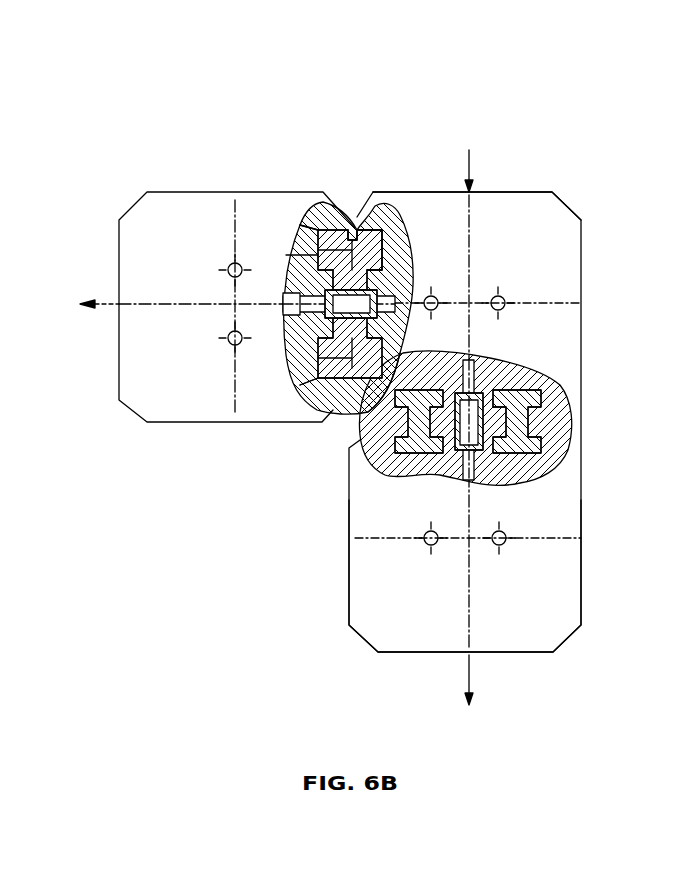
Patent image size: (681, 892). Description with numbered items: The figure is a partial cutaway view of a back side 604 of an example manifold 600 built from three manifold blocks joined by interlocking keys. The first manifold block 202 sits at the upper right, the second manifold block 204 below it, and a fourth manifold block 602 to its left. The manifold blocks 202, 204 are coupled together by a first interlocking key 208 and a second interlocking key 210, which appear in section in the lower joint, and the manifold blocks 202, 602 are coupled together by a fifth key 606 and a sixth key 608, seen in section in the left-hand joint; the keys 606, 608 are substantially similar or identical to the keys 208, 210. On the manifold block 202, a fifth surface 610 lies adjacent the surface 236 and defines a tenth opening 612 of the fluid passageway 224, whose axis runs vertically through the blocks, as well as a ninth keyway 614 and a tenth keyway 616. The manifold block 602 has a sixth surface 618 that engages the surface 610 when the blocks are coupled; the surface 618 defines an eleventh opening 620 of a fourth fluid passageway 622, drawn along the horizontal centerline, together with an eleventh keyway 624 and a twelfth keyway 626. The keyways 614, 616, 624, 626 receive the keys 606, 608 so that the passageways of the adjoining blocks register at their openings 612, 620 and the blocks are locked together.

The manifold 600 is at (186, 57).
The manifold block 602 is at (192, 192).
The back side 604 is at (532, 225).
The manifold block 202 is at (495, 192).
The manifold block 204 is at (425, 652).
The fluid passageway 224 is at (459, 415).
The key 606 is at (282, 352).
The key 608 is at (353, 228).
The surface 610 is at (313, 220).
The surface 618 is at (309, 305).
The opening 612 is at (386, 258).
The keyway 614 is at (357, 390).
The keyway 616 is at (370, 215).
The opening 620 is at (290, 307).
The fluid passageway 622 is at (290, 302).
The keyway 624 is at (300, 348).
The keyway 626 is at (300, 263).
The interlocking key 208 is at (400, 470).
The interlocking key 210 is at (520, 430).
The surface 236 is at (548, 420).